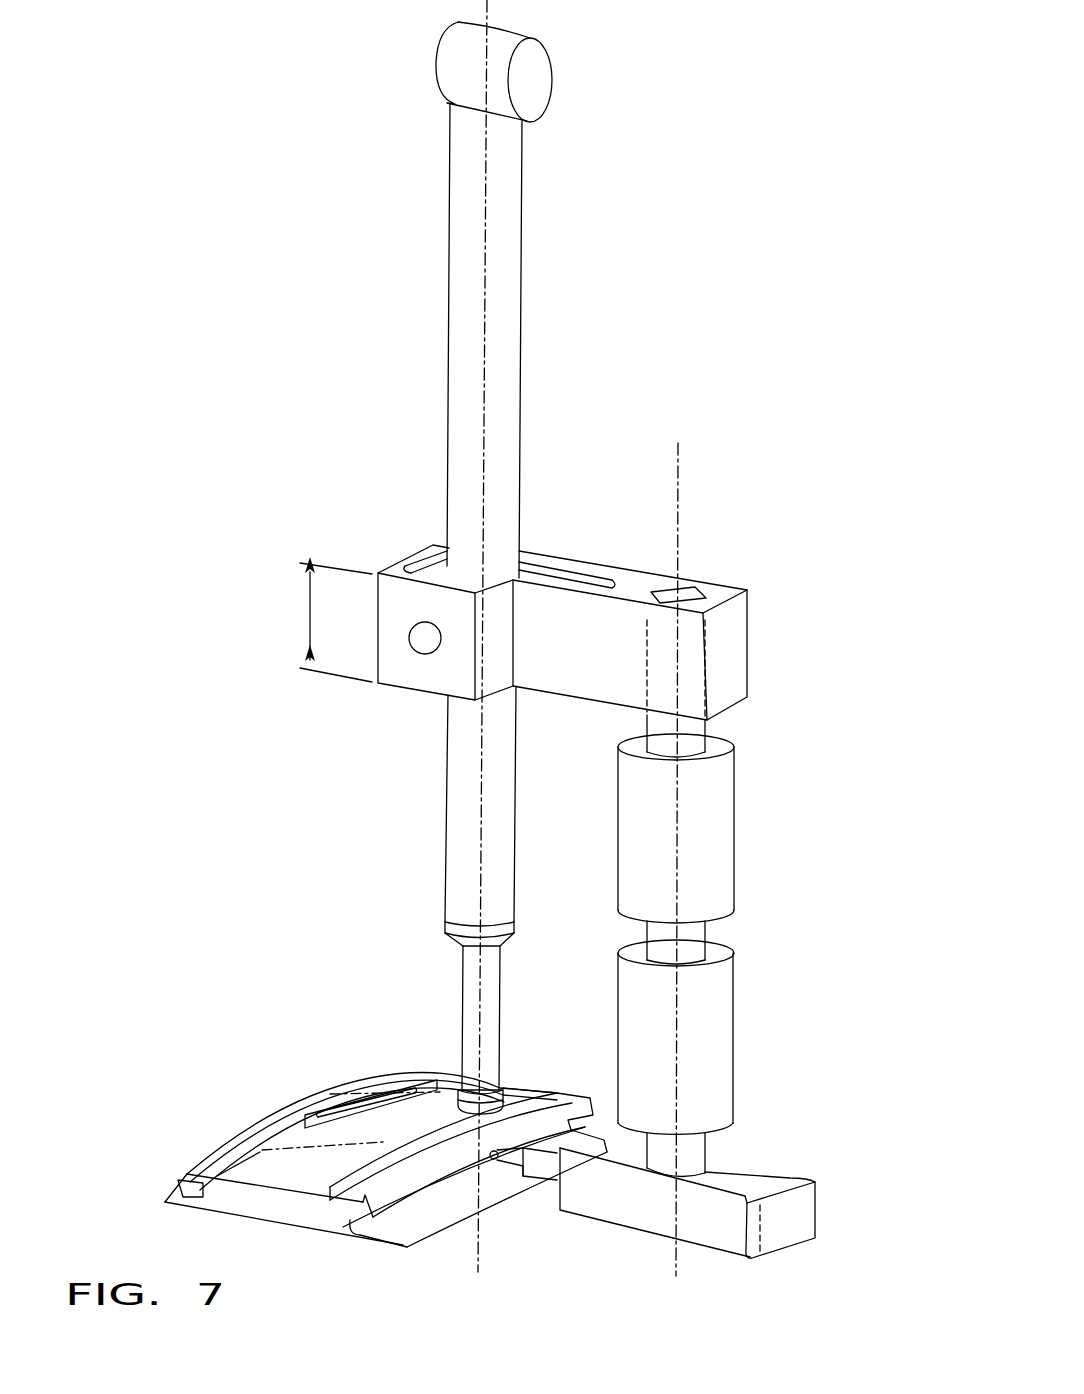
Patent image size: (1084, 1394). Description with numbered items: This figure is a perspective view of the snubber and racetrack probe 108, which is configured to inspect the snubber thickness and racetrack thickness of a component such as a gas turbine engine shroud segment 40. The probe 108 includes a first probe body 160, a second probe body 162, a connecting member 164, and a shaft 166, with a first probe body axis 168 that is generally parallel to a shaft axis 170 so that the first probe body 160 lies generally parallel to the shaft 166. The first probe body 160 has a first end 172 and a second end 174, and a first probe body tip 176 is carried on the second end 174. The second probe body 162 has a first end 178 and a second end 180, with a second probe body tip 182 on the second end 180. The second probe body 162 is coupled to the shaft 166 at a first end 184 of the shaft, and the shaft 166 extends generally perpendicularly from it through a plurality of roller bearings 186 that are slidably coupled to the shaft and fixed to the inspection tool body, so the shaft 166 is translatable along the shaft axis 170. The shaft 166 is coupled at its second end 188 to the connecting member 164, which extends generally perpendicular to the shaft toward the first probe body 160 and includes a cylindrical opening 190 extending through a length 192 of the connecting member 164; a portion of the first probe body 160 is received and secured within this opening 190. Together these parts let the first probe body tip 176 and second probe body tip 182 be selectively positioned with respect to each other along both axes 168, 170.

The base plate 40 is at (213, 1150).
The snubber and racetrack probe 108 is at (748, 155).
The first probe body 160 is at (452, 350).
The second probe body 162 is at (670, 1163).
The connecting member 164 is at (735, 650).
The shaft 166 is at (695, 935).
The first probe body axis 168 is at (487, 6).
The shaft axis 170 is at (680, 483).
The first end 172 is at (530, 34).
The second end 174 is at (505, 1086).
The first probe body tip 176 is at (508, 1099).
The first end 178 is at (808, 1224).
The second end 180 is at (493, 1217).
The second probe body tip 182 is at (492, 1162).
The first end 184 is at (716, 1162).
The roller bearings 186 is at (735, 840).
The second end 188 is at (705, 742).
The opening 190 is at (414, 566).
The length 192 is at (310, 612).